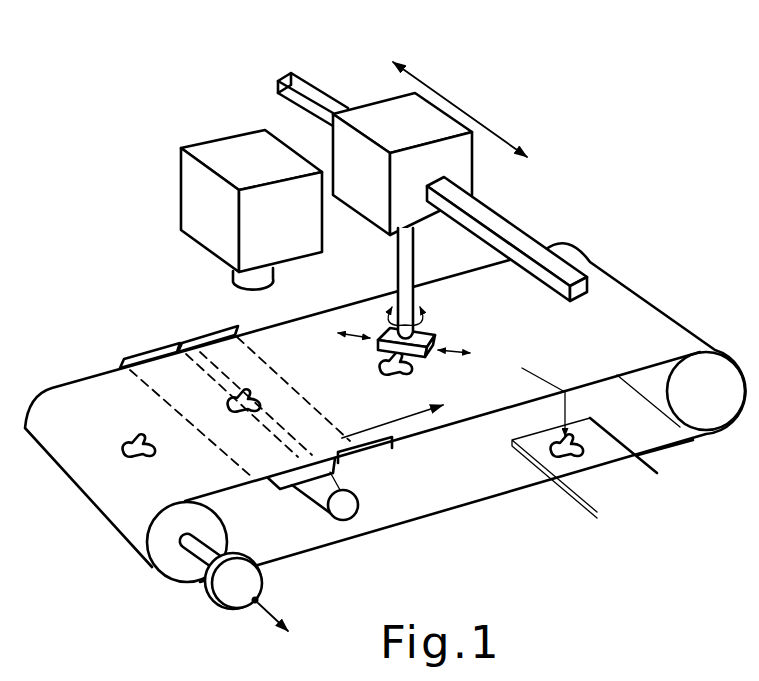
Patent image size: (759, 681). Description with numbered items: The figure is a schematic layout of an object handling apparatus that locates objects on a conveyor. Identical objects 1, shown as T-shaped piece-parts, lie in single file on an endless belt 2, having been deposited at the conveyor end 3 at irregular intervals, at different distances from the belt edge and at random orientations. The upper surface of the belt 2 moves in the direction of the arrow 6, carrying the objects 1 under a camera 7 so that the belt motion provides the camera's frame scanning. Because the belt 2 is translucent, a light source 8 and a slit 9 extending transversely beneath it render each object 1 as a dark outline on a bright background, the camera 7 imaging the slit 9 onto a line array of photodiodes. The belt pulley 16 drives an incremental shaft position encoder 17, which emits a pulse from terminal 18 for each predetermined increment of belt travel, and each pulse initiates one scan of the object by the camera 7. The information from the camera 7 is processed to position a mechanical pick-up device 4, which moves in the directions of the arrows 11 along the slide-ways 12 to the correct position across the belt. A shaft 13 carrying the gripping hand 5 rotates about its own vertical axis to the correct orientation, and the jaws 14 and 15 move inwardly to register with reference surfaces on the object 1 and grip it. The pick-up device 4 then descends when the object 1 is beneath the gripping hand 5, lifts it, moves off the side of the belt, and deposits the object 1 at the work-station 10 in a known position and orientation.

The object 1 is at (133, 433).
The endless belt 2 is at (635, 302).
The conveyor end 3 is at (108, 472).
The mechanical pick-up device 4 is at (390, 108).
The gripping hand 5 is at (420, 332).
The arrow 6 is at (397, 420).
The camera 7 is at (230, 148).
The light source 8 is at (345, 512).
The slit 9 is at (345, 470).
The work-station 10 is at (600, 433).
The arrows 11 is at (470, 113).
The slide-ways 12 is at (498, 223).
The shaft 13 is at (398, 263).
The jaw 14 is at (437, 340).
The jaw 15 is at (377, 347).
The belt pulley 16 is at (160, 575).
The incremental shaft position encoder 17 is at (243, 585).
The terminal 18 is at (257, 603).